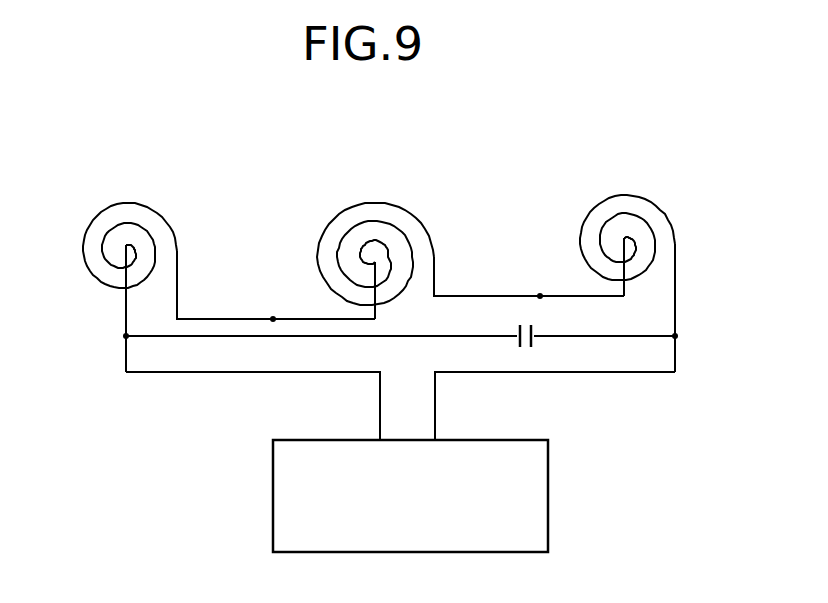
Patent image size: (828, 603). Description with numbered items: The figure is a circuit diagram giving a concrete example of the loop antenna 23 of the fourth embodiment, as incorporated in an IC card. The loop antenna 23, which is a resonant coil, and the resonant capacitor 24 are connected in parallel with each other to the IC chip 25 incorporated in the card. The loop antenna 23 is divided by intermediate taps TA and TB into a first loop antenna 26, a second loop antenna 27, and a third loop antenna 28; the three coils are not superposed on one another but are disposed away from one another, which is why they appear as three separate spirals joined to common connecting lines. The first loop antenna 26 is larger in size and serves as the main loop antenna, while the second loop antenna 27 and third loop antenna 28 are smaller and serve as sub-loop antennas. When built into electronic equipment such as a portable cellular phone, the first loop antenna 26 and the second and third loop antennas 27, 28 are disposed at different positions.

The loop antenna 23 is at (480, 178).
The resonant capacitor 24 is at (518, 327).
The IC chip 25 is at (550, 482).
The first loop antenna 26 is at (378, 203).
The second loop antenna 27 is at (634, 197).
The third loop antenna 28 is at (136, 203).
The intermediate tap TA is at (540, 294).
The intermediate tap TB is at (273, 317).